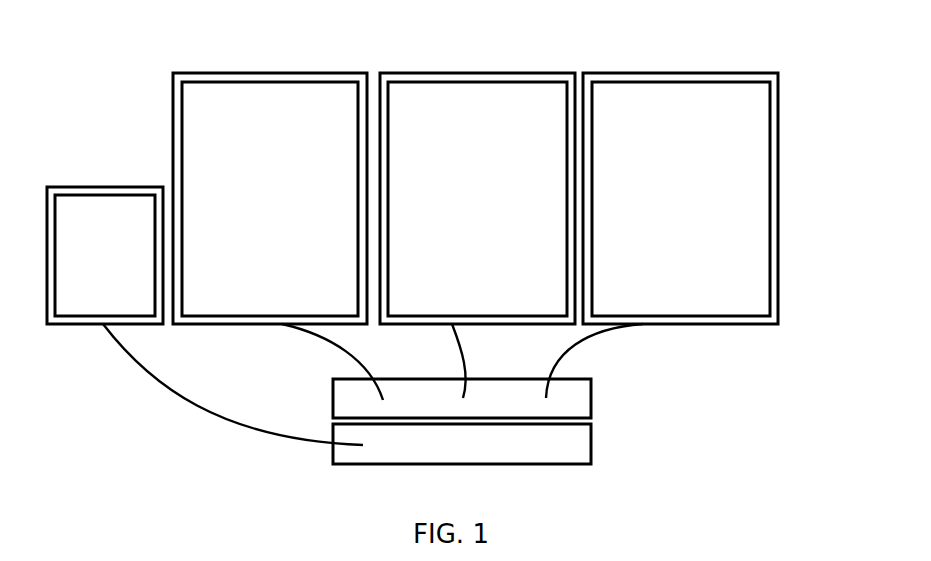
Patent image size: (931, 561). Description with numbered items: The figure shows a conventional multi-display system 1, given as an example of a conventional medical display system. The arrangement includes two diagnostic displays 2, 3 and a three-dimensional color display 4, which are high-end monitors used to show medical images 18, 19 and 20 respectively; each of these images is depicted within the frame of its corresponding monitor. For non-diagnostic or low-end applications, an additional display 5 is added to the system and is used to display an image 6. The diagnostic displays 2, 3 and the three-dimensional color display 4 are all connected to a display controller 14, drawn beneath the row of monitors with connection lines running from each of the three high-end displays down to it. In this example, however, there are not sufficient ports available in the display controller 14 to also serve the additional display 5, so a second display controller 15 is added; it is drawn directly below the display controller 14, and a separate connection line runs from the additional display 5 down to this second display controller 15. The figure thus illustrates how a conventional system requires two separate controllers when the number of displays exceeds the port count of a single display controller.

The system 1 is at (124, 48).
The diagnostic display 2 is at (192, 73).
The diagnostic display 3 is at (403, 73).
The 3D color display 4 is at (603, 73).
The additional display 5 is at (85, 187).
The image 6 is at (63, 218).
The display controller 14 is at (591, 398).
The second display controller 15 is at (591, 443).
The medical image 18 is at (287, 105).
The medical image 19 is at (487, 105).
The medical image 20 is at (717, 108).